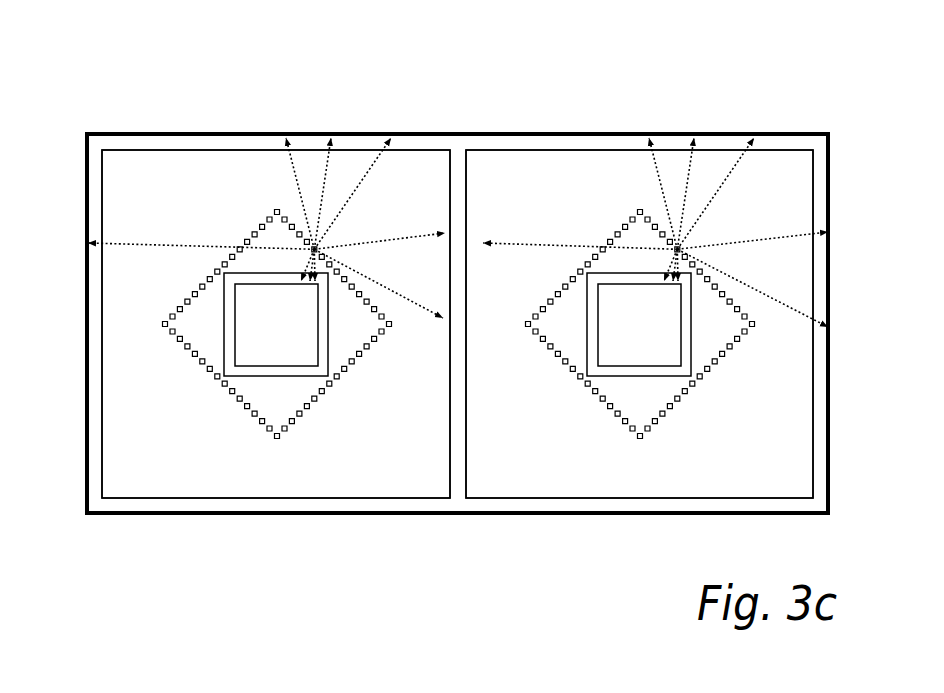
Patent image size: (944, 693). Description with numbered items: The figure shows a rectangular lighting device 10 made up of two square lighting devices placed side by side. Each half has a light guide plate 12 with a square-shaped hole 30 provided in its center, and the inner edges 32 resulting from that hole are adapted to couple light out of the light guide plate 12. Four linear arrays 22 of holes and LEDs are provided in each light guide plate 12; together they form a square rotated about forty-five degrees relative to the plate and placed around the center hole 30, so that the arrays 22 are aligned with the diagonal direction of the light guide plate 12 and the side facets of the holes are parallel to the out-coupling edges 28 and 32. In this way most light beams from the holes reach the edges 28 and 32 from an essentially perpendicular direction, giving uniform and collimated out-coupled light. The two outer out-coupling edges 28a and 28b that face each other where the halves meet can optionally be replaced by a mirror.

The lighting device 10 is at (828, 84).
The light guide plate 12 is at (145, 477).
The linear arrays 22 is at (176, 300).
The out-coupling edges 28 is at (85, 485).
The outer out-coupling edge 28a is at (450, 474).
The outer out-coupling edge 28b is at (466, 449).
The hole 30 is at (245, 313).
The inner edges 32 is at (250, 366).